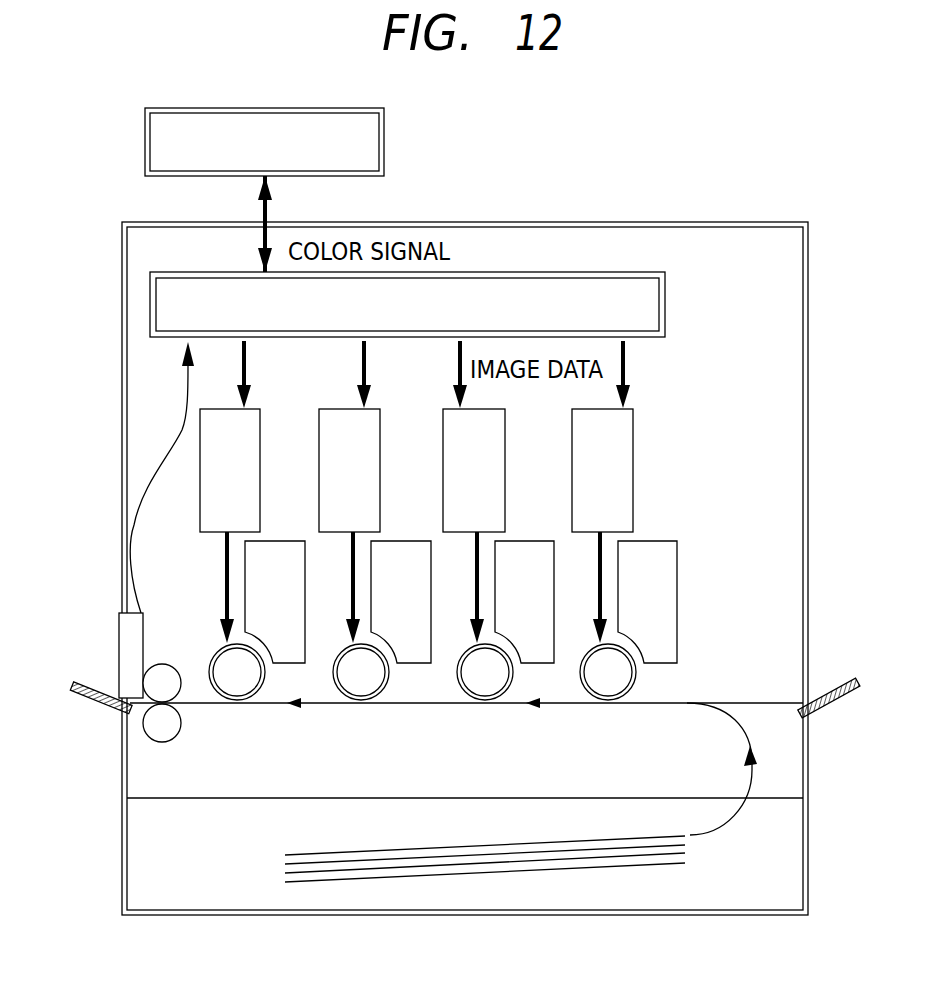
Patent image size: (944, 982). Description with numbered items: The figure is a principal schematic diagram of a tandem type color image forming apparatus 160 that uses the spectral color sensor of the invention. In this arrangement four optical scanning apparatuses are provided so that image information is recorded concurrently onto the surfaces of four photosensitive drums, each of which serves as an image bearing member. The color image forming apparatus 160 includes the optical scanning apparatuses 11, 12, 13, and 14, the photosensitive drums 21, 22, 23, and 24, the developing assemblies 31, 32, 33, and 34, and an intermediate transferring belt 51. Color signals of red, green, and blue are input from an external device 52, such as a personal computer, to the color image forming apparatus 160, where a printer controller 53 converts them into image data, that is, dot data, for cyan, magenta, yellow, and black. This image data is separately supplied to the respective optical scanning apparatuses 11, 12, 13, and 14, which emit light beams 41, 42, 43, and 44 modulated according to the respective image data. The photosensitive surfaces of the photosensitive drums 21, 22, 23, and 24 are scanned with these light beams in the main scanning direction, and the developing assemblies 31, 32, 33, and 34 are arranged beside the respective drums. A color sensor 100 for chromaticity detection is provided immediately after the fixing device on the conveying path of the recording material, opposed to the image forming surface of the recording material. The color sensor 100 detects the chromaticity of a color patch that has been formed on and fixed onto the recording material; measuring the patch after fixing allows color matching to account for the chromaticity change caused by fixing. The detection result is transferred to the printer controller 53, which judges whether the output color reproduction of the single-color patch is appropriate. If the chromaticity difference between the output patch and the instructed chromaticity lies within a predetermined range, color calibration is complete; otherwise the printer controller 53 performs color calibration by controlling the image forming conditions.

The optical scanning apparatus 11 is at (215, 409).
The optical scanning apparatus 12 is at (319, 442).
The optical scanning apparatus 13 is at (443, 442).
The optical scanning apparatus 14 is at (633, 443).
The photosensitive drum 21 is at (237, 688).
The photosensitive drum 22 is at (361, 686).
The photosensitive drum 23 is at (485, 686).
The photosensitive drum 24 is at (608, 684).
The developing assembly 31 is at (282, 548).
The developing assembly 32 is at (405, 548).
The developing assembly 33 is at (535, 548).
The developing assembly 34 is at (658, 548).
The light beam 41 is at (226, 583).
The light beam 42 is at (352, 602).
The light beam 43 is at (476, 602).
The light beam 44 is at (599, 602).
The intermediate transferring belt 51 is at (738, 730).
The external device 52 is at (385, 122).
The printer controller 53 is at (665, 288).
The color sensor 100 is at (118, 621).
The color image forming apparatus 160 is at (722, 222).